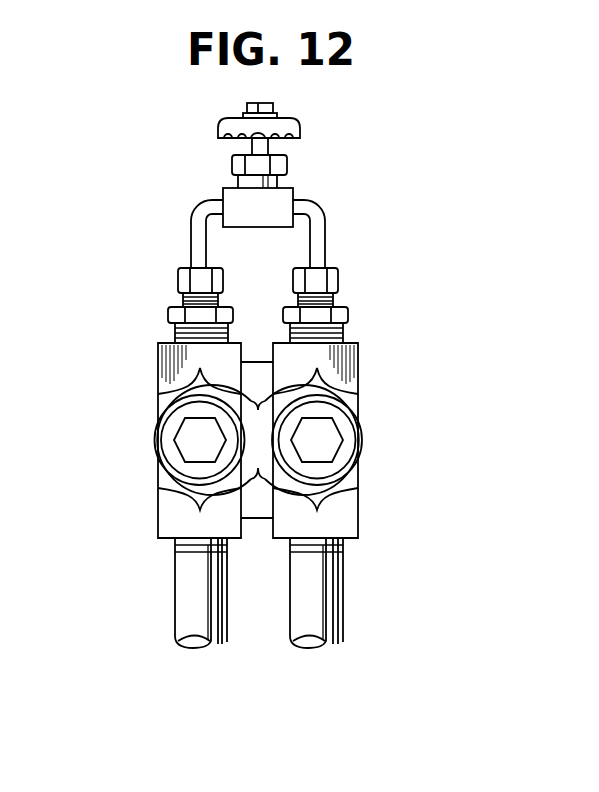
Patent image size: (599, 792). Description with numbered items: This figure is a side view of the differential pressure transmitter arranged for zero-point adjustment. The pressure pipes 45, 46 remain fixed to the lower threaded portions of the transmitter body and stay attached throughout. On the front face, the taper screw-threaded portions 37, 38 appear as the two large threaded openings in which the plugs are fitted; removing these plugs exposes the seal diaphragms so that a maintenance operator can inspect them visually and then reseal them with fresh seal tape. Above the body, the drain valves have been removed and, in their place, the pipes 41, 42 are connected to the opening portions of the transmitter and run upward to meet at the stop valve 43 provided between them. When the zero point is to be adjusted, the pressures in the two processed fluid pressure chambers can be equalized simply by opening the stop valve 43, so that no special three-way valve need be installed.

The taper screw-threaded portion 37 is at (374, 436).
The taper screw-threaded portion 38 is at (144, 442).
The pipe 41 is at (324, 229).
The pipe 42 is at (196, 232).
The stop valve 43 is at (291, 140).
The pressure pipe 45 is at (176, 595).
The pressure pipe 46 is at (343, 597).